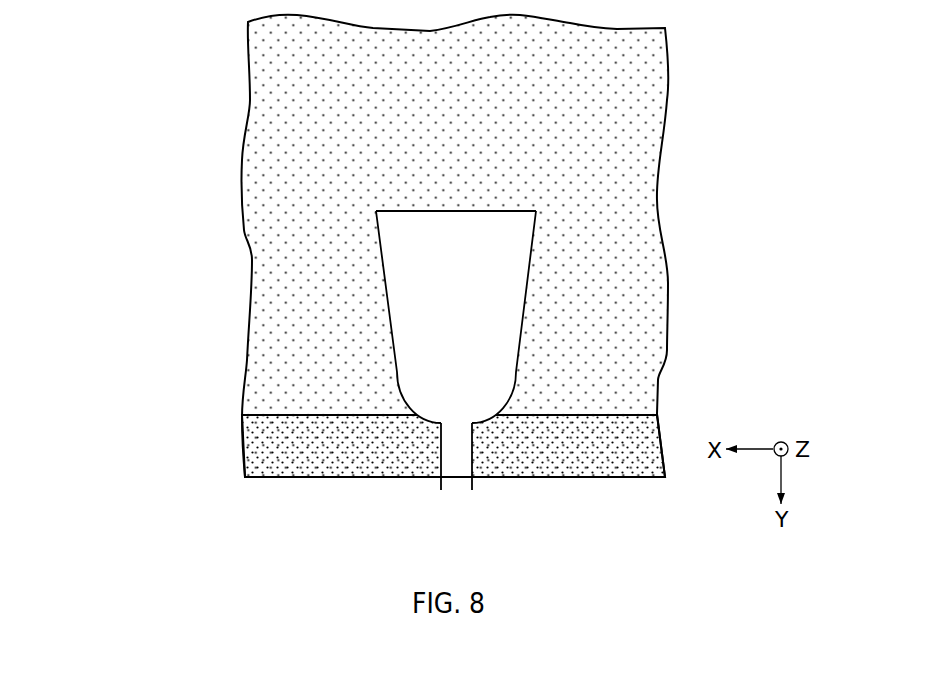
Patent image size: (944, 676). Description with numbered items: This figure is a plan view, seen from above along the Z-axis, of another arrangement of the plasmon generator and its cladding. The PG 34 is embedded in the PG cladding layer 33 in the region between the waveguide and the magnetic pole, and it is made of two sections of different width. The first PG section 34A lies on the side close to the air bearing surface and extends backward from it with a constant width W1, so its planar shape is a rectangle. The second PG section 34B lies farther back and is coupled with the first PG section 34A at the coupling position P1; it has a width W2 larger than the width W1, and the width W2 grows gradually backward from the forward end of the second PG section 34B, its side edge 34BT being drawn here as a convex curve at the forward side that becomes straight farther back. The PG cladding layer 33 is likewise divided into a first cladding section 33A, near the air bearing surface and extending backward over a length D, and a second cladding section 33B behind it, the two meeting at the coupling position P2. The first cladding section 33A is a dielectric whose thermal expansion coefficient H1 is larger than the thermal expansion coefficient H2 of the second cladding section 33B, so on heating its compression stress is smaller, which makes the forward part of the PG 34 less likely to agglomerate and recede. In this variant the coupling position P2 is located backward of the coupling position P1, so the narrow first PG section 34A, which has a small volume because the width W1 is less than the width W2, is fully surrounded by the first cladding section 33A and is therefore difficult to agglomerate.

The PG cladding layer 33 is at (386, 246).
The first cladding section 33A is at (330, 432).
The second cladding section 33B is at (267, 293).
The PG 34 is at (598, 350).
The first PG section 34A is at (458, 448).
The second PG section 34B is at (502, 342).
The side edge of the second PG section 34BT is at (533, 270).
The width of the first PG section W1 is at (441, 490).
The width of the second PG section W2 is at (536, 211).
The extending length of the first cladding section D is at (247, 477).
The coupling position of the first and second PG sections P1 is at (245, 423).
The coupling position of the first and second cladding sections P2 is at (245, 417).
The thermal expansion coefficient of the first cladding section H1 is at (386, 455).
The thermal expansion coefficient of the second cladding section H2 is at (328, 330).